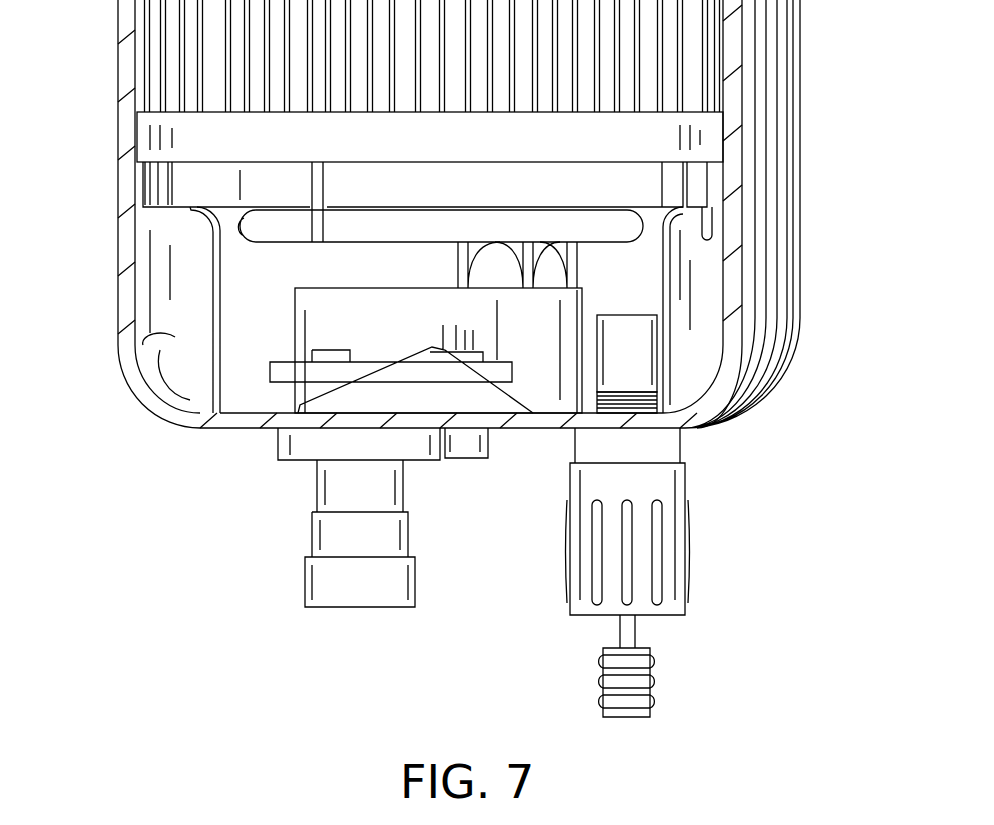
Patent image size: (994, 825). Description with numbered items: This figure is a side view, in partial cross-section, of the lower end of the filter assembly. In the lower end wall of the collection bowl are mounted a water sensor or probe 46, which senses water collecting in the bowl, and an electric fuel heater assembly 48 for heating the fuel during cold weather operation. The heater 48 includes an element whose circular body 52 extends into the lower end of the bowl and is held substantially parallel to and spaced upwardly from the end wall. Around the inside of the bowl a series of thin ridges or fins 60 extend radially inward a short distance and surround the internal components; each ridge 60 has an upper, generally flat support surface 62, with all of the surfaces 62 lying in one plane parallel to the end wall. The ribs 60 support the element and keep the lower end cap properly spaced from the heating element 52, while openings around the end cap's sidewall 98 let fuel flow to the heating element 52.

The sidewall 98 is at (237, 173).
The support surface 62 is at (194, 188).
The circular body 52 is at (637, 221).
The ridges 60 is at (132, 342).
The electric fuel heater assembly 48 is at (415, 578).
The water sensor 46 is at (687, 567).